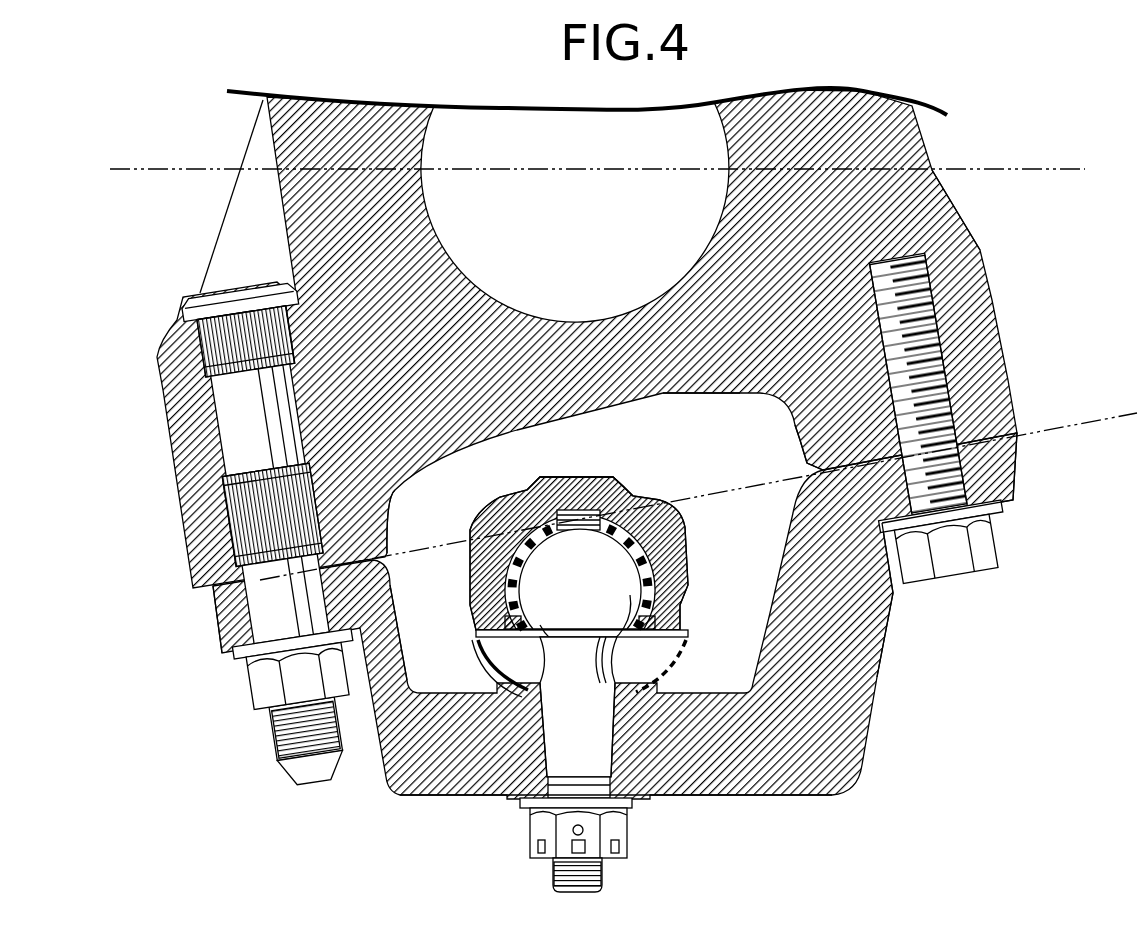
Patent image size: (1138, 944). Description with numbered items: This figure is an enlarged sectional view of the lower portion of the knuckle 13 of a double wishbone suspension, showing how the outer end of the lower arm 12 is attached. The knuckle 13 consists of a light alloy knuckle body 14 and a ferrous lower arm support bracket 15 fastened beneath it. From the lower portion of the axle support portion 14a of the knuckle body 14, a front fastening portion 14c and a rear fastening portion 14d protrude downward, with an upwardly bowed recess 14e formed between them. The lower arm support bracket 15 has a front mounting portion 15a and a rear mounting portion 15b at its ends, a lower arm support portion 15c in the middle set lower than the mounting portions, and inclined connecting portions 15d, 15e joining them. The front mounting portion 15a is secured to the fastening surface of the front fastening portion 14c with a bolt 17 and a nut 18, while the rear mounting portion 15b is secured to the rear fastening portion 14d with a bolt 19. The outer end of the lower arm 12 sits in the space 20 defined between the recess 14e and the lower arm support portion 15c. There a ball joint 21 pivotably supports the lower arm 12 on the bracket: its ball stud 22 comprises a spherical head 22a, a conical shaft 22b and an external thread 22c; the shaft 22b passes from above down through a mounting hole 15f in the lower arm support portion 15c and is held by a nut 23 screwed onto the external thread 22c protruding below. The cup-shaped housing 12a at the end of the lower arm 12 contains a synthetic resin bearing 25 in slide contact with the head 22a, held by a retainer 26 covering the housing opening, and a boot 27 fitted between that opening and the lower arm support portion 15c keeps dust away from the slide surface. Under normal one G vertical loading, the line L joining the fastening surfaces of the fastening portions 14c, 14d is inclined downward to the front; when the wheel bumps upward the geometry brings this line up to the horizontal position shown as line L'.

The lower arm 12 is at (594, 668).
The cup-shaped housing 12a is at (570, 492).
The knuckle 13 is at (541, 443).
The knuckle body 14 is at (183, 525).
The axle support portion 14a is at (943, 203).
The front fastening portion 14c is at (387, 495).
The rear fastening portion 14d is at (824, 443).
The recess 14e is at (668, 398).
The lower arm support bracket 15 is at (212, 617).
The front mounting portion 15a is at (230, 627).
The rear mounting portion 15b is at (1010, 470).
The lower arm support portion 15c is at (717, 777).
The inclined connecting portion 15d is at (394, 648).
The inclined connecting portion 15e is at (797, 600).
The mounting hole 15f is at (543, 708).
The bolt 17 is at (237, 430).
The nut 18 is at (270, 683).
The bolt 19 is at (947, 547).
The space 20 is at (699, 479).
The ball joint 21 is at (692, 560).
The ball stud 22 is at (532, 748).
The spherical head 22a is at (552, 582).
The conical shaft 22b is at (590, 792).
The external thread 22c is at (567, 867).
The nut 23 is at (613, 830).
The synthetic resin bearing 25 is at (650, 575).
The retainer 26 is at (648, 648).
The boot 27 is at (500, 656).
The line L is at (698, 474).
The line L' is at (609, 149).